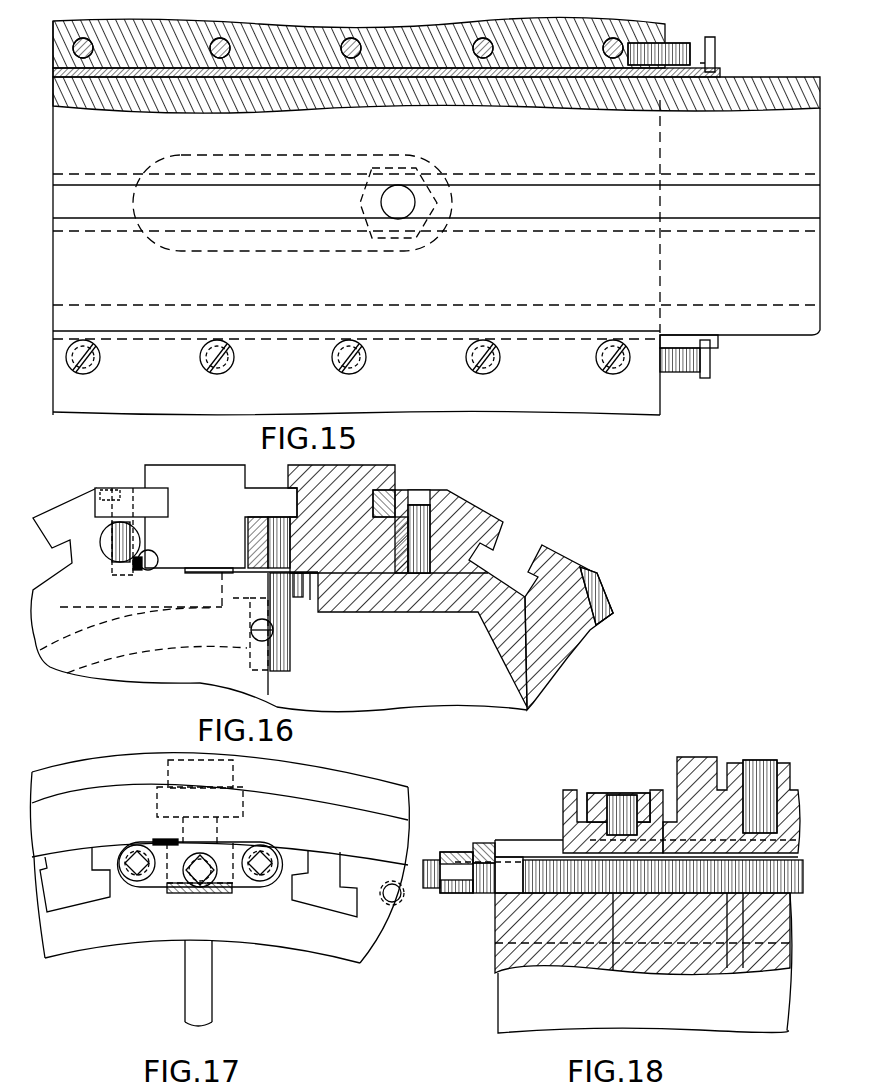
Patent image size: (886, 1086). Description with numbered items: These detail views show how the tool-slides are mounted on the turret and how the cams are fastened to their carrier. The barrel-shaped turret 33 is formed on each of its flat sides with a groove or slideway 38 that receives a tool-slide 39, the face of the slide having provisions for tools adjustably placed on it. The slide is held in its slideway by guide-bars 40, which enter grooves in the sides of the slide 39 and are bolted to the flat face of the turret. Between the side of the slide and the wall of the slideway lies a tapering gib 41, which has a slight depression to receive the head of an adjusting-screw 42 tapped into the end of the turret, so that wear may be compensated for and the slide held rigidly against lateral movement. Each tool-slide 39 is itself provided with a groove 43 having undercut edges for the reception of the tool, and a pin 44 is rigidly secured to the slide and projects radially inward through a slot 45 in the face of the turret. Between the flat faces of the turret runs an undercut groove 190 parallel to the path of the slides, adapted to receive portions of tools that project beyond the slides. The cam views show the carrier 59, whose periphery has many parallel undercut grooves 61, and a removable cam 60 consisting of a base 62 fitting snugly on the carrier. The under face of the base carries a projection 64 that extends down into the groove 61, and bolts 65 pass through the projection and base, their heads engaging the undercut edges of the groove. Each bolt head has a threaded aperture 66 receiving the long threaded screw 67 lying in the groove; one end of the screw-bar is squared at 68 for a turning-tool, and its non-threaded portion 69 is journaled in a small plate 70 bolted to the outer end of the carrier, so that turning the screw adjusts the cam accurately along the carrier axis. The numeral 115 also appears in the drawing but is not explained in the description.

In FIG. 15, the turret 33 is at (538, 405).
In FIG. 16, the turret 33 is at (410, 600).
In FIG. 15, the groove or slideway 38 is at (572, 76).
In FIG. 16, the groove or slideway 38 is at (296, 602).
In FIG. 15, the tool-slide 39 is at (750, 318).
In FIG. 16, the tool-slide 39 is at (193, 465).
In FIG. 15, the guide-bar 40 is at (606, 390).
In FIG. 16, the guide-bar 40 is at (147, 493).
In FIG. 15, the tapering gib 41 is at (716, 72).
In FIG. 16, the tapering gib 41 is at (152, 571).
In FIG. 15, the adjusting-screw 42 is at (690, 55).
In FIG. 16, the adjusting-screw 42 is at (103, 537).
In FIG. 15, the groove 43 is at (554, 210).
In FIG. 16, the groove 43 is at (262, 502).
In FIG. 15, the pin 44 is at (406, 196).
In FIG. 16, the pin 44 is at (290, 672).
In FIG. 15, the slot 45 is at (352, 158).
In FIG. 17, the carrier 59 is at (340, 947).
In FIG. 18, the carrier 59 is at (493, 935).
In FIG. 17, the cam 60 is at (313, 785).
In FIG. 18, the cam 60 is at (688, 757).
In FIG. 17, the groove 61 is at (80, 870).
In FIG. 17, the base 62 is at (362, 827).
In FIG. 18, the base 62 is at (563, 830).
In FIG. 17, the projection 64 is at (223, 835).
In FIG. 18, the projection 64 is at (560, 840).
In FIG. 18, the bolt 65 is at (605, 793).
In FIG. 18, the threaded aperture 66 is at (607, 963).
In FIG. 18, the threaded screw 67 is at (493, 890).
In FIG. 17, the squared end 68 is at (205, 888).
In FIG. 18, the squared end 68 is at (432, 862).
In FIG. 18, the non-threaded portion 69 is at (482, 887).
In FIG. 17, the plate 70 is at (157, 876).
In FIG. 18, the plate 70 is at (482, 847).
In FIG. 16, the nut 115 is at (302, 655).
In FIG. 16, the groove 190 is at (565, 522).